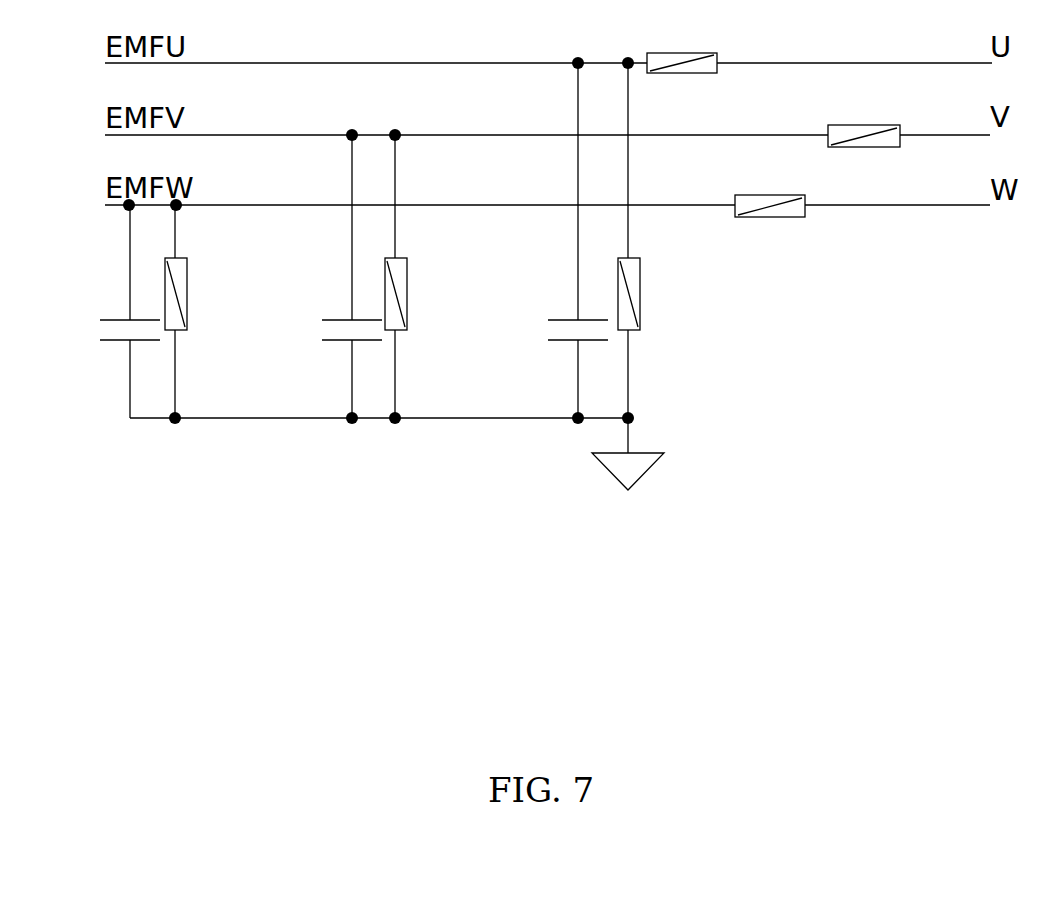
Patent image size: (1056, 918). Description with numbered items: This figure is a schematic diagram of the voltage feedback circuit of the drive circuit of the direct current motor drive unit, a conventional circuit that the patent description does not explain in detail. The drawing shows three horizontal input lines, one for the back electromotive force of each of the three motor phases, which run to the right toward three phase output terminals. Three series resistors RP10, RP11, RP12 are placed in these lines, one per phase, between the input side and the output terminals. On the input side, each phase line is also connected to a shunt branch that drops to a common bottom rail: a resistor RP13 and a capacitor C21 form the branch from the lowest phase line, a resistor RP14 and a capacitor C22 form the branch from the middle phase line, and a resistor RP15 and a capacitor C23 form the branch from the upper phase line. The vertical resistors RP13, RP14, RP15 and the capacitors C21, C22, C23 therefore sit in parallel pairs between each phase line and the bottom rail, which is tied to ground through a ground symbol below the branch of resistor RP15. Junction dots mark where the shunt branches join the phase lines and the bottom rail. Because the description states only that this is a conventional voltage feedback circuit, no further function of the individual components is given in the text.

The resistor RP10 is at (680, 43).
The resistor RP11 is at (864, 118).
The resistor RP12 is at (771, 188).
The resistor RP13 is at (212, 294).
The resistor RP14 is at (434, 294).
The resistor RP15 is at (670, 294).
The capacitor C21 is at (106, 292).
The capacitor C22 is at (326, 330).
The capacitor C23 is at (551, 330).